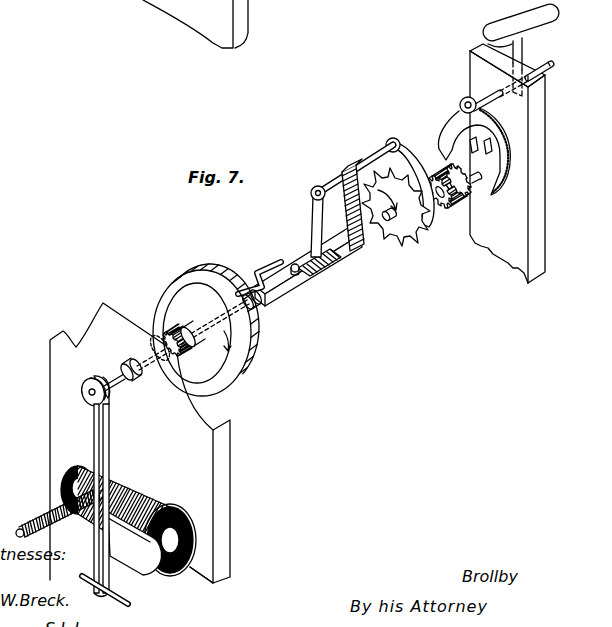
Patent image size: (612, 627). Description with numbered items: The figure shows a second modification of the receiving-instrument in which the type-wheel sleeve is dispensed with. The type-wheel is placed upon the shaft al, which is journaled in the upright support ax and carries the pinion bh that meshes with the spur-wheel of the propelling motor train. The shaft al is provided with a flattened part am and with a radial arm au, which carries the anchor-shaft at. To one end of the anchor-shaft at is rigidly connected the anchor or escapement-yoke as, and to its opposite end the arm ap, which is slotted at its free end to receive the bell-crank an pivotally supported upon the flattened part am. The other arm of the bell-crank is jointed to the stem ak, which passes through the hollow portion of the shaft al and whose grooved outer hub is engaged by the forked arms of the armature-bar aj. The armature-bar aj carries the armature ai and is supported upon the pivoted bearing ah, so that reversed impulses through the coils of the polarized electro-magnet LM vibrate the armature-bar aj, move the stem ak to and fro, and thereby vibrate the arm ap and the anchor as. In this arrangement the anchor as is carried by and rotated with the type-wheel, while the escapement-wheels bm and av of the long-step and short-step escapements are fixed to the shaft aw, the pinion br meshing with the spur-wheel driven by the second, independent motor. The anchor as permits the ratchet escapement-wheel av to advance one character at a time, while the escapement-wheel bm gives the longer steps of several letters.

The escapement-wheel bm is at (484, 197).
The pinion br is at (453, 210).
The escapement-yoke (anchor) as is at (414, 174).
The anchor-shaft at is at (363, 165).
The escapement-wheel av is at (386, 243).
The shaft aw is at (381, 225).
The flattened part of shaft am is at (291, 290).
The bell-crank arm an is at (312, 262).
The radial arm au is at (347, 205).
The arm ap is at (313, 225).
The stem (spindle) ak is at (265, 275).
The shaft al is at (259, 304).
The upright support ax is at (140, 443).
The pinion bh is at (180, 330).
The armature ai is at (135, 543).
The armature-lever (armature-bar) aj is at (110, 487).
The pivoted bearing ah is at (116, 593).
The polarized electro-magnet LM is at (158, 568).